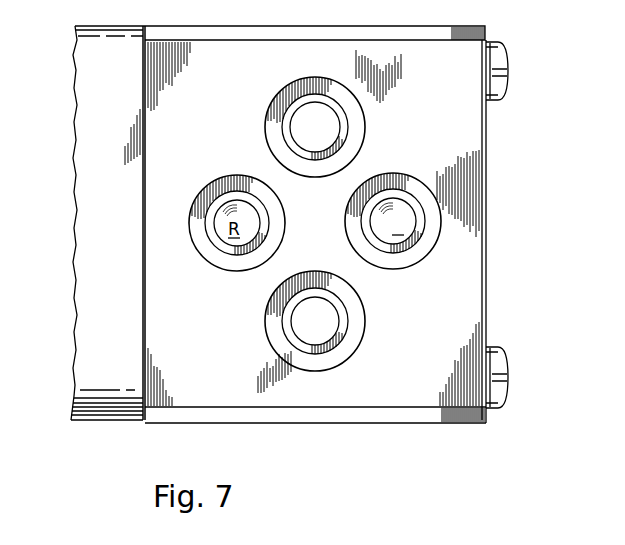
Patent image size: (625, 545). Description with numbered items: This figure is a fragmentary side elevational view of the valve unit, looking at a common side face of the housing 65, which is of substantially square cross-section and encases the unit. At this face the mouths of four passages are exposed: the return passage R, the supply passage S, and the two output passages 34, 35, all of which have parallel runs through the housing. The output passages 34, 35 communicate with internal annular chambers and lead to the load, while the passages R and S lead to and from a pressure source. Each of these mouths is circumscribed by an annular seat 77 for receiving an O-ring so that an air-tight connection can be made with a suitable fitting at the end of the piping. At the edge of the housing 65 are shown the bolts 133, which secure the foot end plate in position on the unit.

The housing 65 is at (95, 347).
The bolts 133 is at (505, 92).
The output passage 35 is at (330, 132).
The output passage 34 is at (326, 322).
The annular seat 77 is at (398, 266).